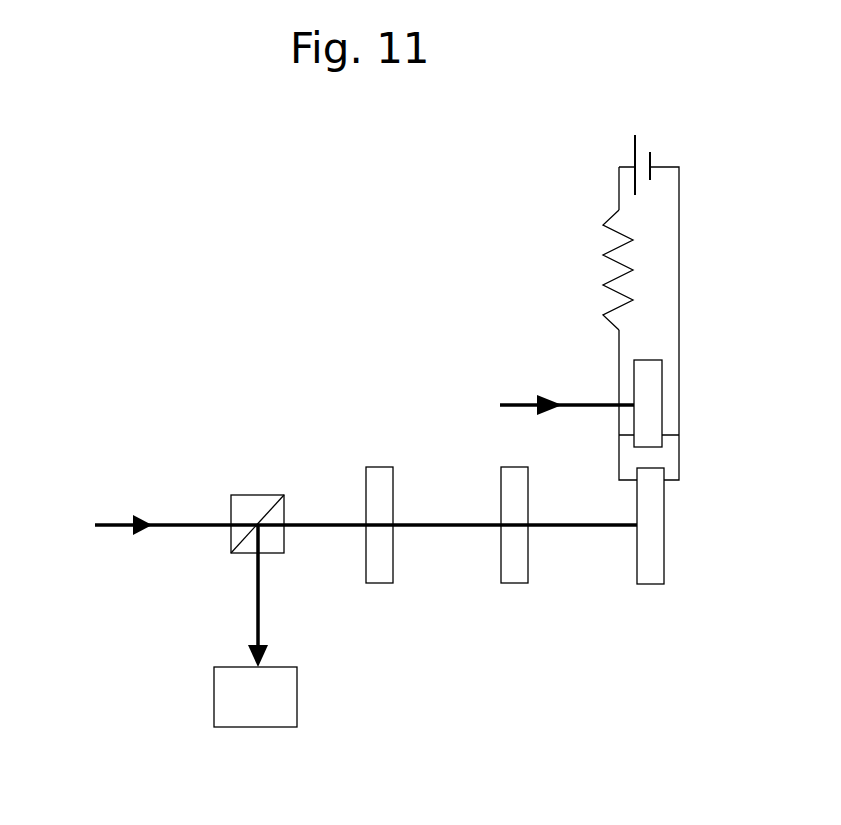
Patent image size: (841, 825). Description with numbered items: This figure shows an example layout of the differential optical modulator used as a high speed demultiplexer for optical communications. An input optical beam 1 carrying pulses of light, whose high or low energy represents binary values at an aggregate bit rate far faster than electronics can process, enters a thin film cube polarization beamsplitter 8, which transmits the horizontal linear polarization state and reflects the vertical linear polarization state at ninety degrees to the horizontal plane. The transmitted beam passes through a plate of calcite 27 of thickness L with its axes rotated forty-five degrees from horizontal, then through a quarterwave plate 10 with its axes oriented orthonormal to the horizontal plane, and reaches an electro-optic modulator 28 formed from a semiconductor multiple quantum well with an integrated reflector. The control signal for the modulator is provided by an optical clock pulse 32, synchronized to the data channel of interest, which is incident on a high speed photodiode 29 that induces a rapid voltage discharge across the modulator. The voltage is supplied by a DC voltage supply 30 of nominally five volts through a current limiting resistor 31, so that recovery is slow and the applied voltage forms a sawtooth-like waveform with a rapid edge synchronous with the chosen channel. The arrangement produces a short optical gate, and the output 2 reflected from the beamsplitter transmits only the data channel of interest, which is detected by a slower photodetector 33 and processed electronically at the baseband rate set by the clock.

The optical beam 1 is at (117, 522).
The output 2 is at (252, 584).
The thin film cube polarization beamsplitter 8 is at (245, 495).
The quarterwave plate 10 is at (507, 466).
The plate of calcite 27 is at (372, 466).
The electro-optic modulator 28 is at (656, 587).
The high speed photodiode 29 is at (663, 413).
The DC voltage supply 30 is at (652, 143).
The current limiting resistor 31 is at (595, 285).
The optical clock pulse 32 is at (560, 403).
The photodetector 33 is at (297, 697).